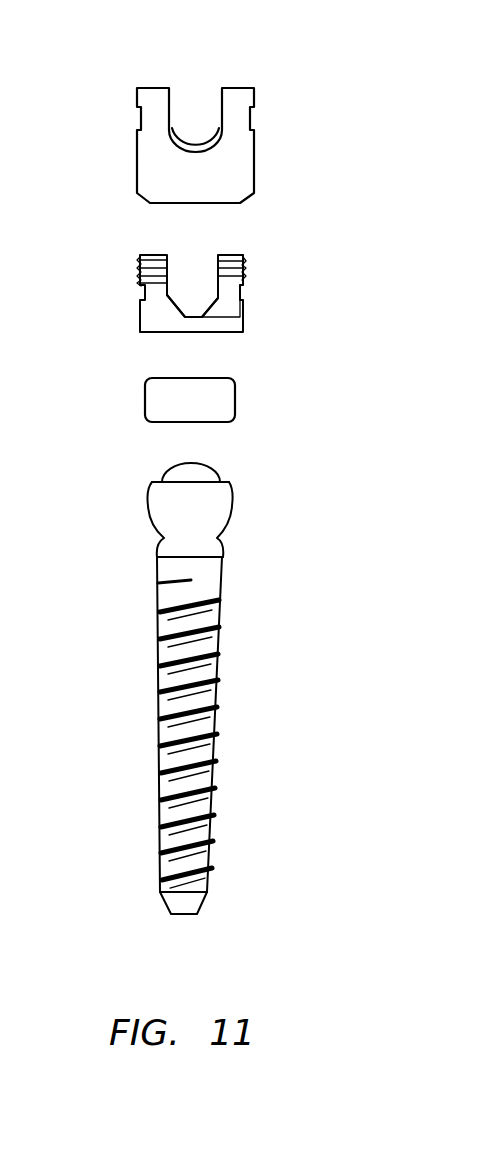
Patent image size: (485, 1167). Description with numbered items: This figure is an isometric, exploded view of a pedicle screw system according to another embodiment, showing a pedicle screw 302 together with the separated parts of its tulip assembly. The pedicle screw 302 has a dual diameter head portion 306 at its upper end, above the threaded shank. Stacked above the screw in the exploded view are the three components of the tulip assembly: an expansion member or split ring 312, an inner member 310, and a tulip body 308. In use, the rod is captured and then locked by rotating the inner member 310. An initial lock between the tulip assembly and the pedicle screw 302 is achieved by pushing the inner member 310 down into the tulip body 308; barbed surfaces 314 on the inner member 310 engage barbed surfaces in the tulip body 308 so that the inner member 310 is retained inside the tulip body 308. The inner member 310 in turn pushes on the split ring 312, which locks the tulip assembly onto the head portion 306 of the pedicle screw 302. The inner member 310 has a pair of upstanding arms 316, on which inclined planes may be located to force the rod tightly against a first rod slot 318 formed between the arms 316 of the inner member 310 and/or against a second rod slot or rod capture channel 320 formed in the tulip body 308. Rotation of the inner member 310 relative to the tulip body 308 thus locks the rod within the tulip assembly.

The pedicle screw 302 is at (249, 673).
The dual diameter head portion 306 is at (252, 484).
The tulip body 308 is at (142, 120).
The inner member 310 is at (186, 274).
The expansion member or split ring 312 is at (145, 395).
The barbed surfaces 314 is at (246, 269).
The arms 316 is at (235, 257).
The first rod slot 318 is at (180, 312).
The second rod slot or rod capture channel 320 is at (184, 148).